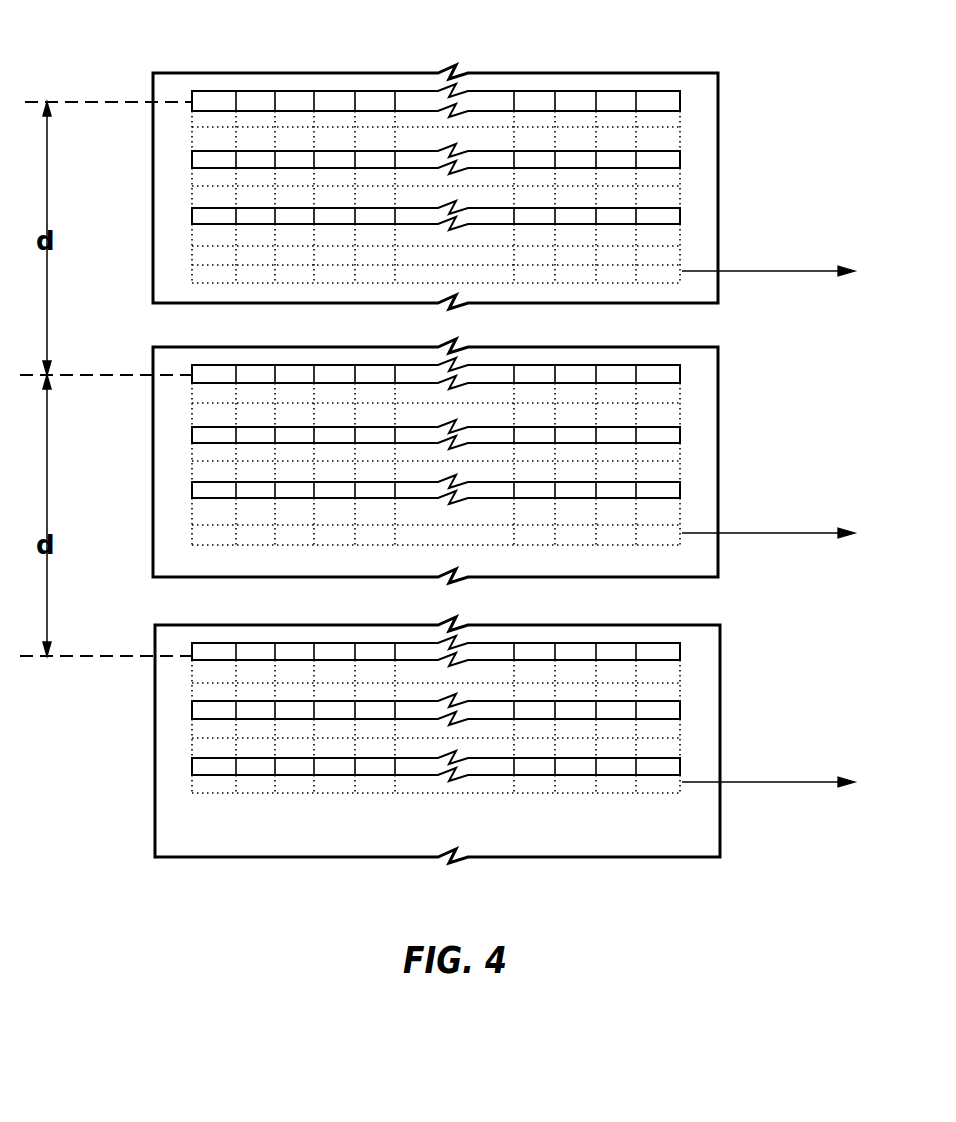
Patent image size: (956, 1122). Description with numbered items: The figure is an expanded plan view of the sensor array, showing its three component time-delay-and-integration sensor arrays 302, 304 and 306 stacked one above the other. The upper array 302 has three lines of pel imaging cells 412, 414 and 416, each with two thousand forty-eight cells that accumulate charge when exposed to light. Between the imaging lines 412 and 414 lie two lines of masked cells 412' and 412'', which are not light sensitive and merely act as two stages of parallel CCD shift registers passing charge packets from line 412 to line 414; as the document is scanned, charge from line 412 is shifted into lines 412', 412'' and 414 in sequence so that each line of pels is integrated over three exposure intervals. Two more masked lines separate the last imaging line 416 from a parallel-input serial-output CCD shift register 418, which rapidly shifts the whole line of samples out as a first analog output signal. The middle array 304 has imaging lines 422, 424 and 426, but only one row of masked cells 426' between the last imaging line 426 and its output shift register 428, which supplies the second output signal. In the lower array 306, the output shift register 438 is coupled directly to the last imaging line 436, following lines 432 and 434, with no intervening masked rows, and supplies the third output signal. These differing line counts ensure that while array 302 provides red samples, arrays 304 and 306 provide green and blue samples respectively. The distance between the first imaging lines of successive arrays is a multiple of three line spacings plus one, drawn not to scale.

The TDI sensor array 302 is at (718, 108).
The TDI sensor array 304 is at (718, 378).
The TDI sensor array 306 is at (556, 857).
The line of pel imaging cells 412 is at (446, 80).
The line of masked cells 412' is at (382, 125).
The line of masked cells 412'' is at (379, 159).
The line of pel imaging cells 414 is at (682, 160).
The line of pel imaging cells 416 is at (682, 215).
The serial output CCD shift register 418 is at (682, 265).
The line of pel imaging cells 422 is at (682, 380).
The line of pel imaging cells 424 is at (682, 437).
The line of pel imaging cells 426 is at (481, 489).
The row of masked cells 426' is at (389, 521).
The output shift register 428 is at (670, 545).
The line of pel imaging cells 432 is at (682, 652).
The line of pel imaging cells 434 is at (682, 710).
The line of pel imaging cells 436 is at (682, 766).
The output shift register 438 is at (620, 795).